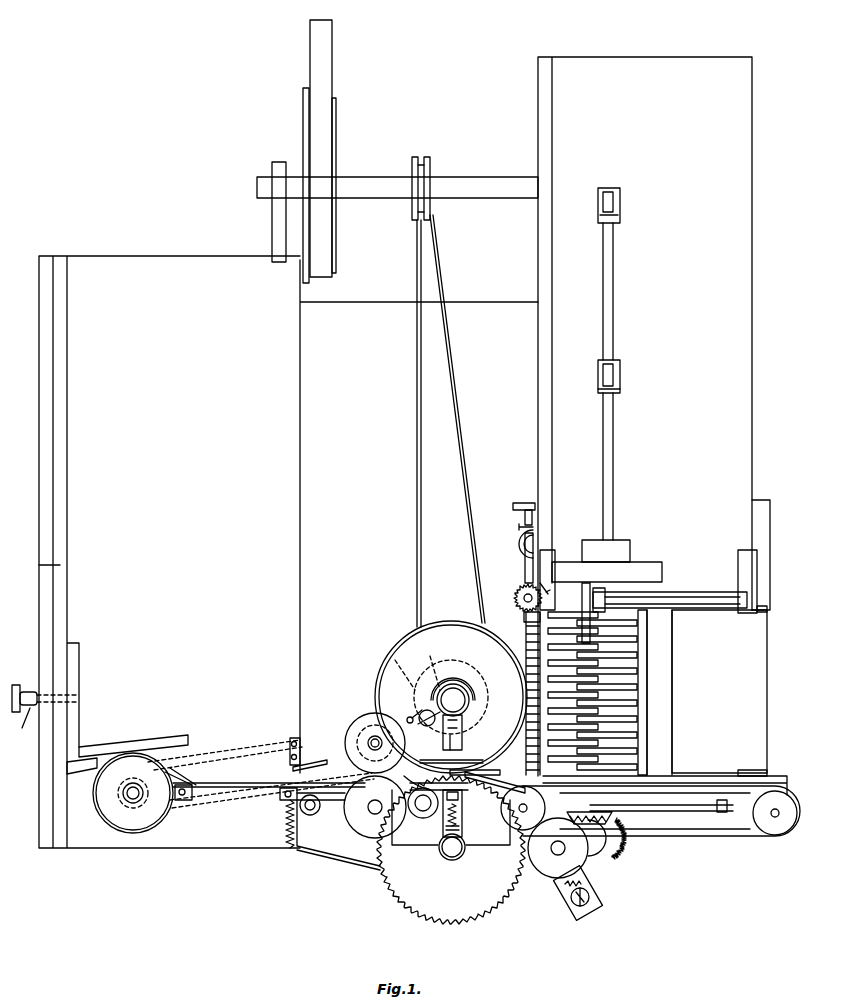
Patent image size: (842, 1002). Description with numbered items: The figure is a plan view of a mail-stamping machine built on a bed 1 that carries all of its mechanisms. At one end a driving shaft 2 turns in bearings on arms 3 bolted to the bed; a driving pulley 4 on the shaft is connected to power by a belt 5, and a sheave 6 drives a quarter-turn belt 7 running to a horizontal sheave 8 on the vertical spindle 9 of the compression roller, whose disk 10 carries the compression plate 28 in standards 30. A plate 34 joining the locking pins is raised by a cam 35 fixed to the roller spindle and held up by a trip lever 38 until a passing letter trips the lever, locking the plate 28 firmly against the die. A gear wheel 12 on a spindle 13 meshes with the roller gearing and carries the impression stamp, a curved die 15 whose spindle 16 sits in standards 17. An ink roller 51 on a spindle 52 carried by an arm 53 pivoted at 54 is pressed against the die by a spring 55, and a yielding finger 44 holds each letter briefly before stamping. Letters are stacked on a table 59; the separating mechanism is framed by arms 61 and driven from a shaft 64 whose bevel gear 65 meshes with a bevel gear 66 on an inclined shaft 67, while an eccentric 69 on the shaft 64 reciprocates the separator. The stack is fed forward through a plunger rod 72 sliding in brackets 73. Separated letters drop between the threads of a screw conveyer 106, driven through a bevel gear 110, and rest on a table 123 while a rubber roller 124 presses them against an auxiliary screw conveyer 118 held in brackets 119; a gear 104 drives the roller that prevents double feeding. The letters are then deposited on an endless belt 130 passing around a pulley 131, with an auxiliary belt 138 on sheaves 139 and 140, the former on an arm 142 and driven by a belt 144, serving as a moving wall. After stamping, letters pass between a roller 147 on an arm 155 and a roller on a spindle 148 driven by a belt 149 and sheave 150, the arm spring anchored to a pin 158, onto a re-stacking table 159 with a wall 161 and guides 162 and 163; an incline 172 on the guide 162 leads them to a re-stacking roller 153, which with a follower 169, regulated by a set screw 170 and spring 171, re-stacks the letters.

The bed 1 is at (419, 516).
The driving shaft 2 is at (397, 179).
The arms 3 is at (272, 224).
The driving pulley 4 is at (325, 185).
The belt 5 is at (321, 148).
The sheave 6 is at (428, 188).
The quarter-turn belt 7 is at (451, 421).
The horizontal sheave 8 is at (392, 665).
The vertical spindle 9 is at (453, 700).
The disk 10 is at (452, 695).
The gear wheel 12 is at (451, 850).
The spindle 13 is at (459, 849).
The die 15 is at (417, 791).
The spindle 16 is at (462, 819).
The standards 17 is at (462, 835).
The compression plate 28 is at (488, 768).
The standards 30 is at (450, 761).
The plate 34 is at (462, 722).
The cam 35 is at (466, 690).
The trip lever 38 is at (420, 711).
The yielding finger 44 is at (460, 798).
The ink roller 51 is at (558, 848).
The spindle 52 is at (565, 848).
The arm 53 is at (585, 878).
The pivot 54 is at (568, 904).
The spring 55 is at (568, 885).
The table 59 is at (645, 416).
The arms 61 is at (745, 568).
The shaft 64 is at (683, 594).
The bevel-gear wheel 65 is at (538, 586).
The bevel gear wheel 66 is at (514, 598).
The inclined shaft 67 is at (525, 566).
The eccentric 69 is at (582, 597).
The plunger rod 72 is at (613, 472).
The brackets 73 is at (621, 290).
The gear 104 is at (650, 814).
The screw conveyer 106 is at (592, 691).
The bevel gear 110 is at (613, 838).
The auxiliary screw conveyer 118 is at (519, 693).
The brackets 119 is at (519, 504).
The table 123 is at (719, 691).
The roller 124 is at (656, 692).
The endless belt 130 is at (665, 783).
The pulley 131 is at (771, 767).
The auxiliary belt 138 is at (712, 828).
The horizontal sheave 139 is at (775, 813).
The horizontal sheave 140 is at (523, 808).
The arm 142 is at (467, 782).
The belt 144 is at (375, 738).
The roller 147 is at (375, 807).
The vertical spindle 148 is at (368, 743).
The belt 149 is at (225, 752).
The sheave 150 is at (367, 741).
The re-stacking roller 153 is at (133, 833).
The arm 155 is at (322, 815).
The pin 158 is at (286, 830).
The re-stacking table 159 is at (169, 552).
The wall 161 is at (39, 566).
The guide 162 is at (269, 777).
The guide 163 is at (272, 786).
The follower 169 is at (127, 747).
The set screw 170 is at (16, 722).
The spring 171 is at (35, 688).
The incline 172 is at (180, 780).